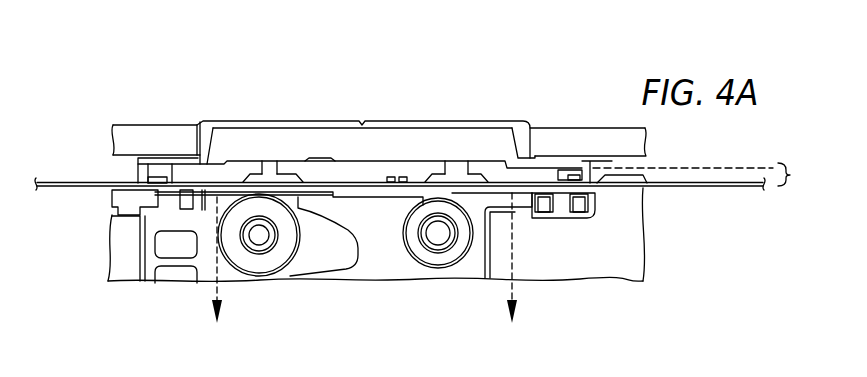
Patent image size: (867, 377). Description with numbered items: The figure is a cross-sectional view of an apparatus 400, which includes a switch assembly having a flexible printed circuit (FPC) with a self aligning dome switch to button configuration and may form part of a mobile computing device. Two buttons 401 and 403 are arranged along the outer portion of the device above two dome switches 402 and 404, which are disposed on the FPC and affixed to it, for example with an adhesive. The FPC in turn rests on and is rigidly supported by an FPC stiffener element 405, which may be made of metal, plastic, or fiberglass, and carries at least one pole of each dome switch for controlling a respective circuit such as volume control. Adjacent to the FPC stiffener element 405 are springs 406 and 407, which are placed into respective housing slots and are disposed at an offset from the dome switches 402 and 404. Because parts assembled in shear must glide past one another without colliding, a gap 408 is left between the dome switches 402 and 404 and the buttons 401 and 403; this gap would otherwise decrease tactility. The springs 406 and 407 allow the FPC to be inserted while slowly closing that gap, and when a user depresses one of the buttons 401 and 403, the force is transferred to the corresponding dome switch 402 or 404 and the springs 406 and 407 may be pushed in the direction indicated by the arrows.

The apparatus 400 is at (582, 75).
The button 401 is at (258, 170).
The dome switch 402 is at (288, 172).
The button 403 is at (458, 170).
The dome switch 404 is at (462, 177).
The FPC stiffener element 405 is at (207, 187).
The spring 406 is at (193, 185).
The spring 407 is at (520, 187).
The gap 408 is at (696, 159).